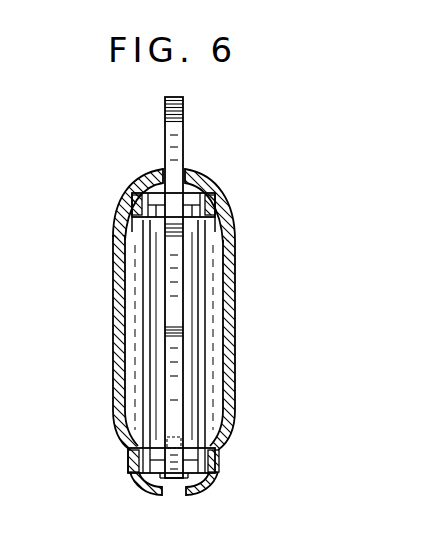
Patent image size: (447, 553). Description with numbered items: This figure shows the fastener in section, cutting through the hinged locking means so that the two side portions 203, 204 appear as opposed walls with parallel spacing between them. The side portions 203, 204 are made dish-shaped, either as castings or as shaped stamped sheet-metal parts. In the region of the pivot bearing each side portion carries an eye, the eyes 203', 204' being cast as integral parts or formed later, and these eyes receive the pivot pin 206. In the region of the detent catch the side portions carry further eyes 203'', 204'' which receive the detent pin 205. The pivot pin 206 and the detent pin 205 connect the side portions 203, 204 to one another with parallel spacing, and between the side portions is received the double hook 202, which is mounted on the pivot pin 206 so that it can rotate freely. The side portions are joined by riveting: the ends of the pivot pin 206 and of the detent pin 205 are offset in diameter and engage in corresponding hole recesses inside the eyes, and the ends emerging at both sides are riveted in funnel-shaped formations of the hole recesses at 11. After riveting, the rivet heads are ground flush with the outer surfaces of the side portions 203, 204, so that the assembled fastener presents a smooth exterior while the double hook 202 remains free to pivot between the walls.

The double hook 202 is at (165, 121).
The side portion 203 is at (223, 330).
The eye 203' is at (223, 330).
The eye 203'' is at (223, 338).
The side portion 204 is at (223, 330).
The eye 204' is at (223, 303).
The eye 204'' is at (223, 340).
The detent pin 205 is at (148, 478).
The pivot pin 206 is at (150, 196).
The funnel-shaped formations 11 is at (132, 203).